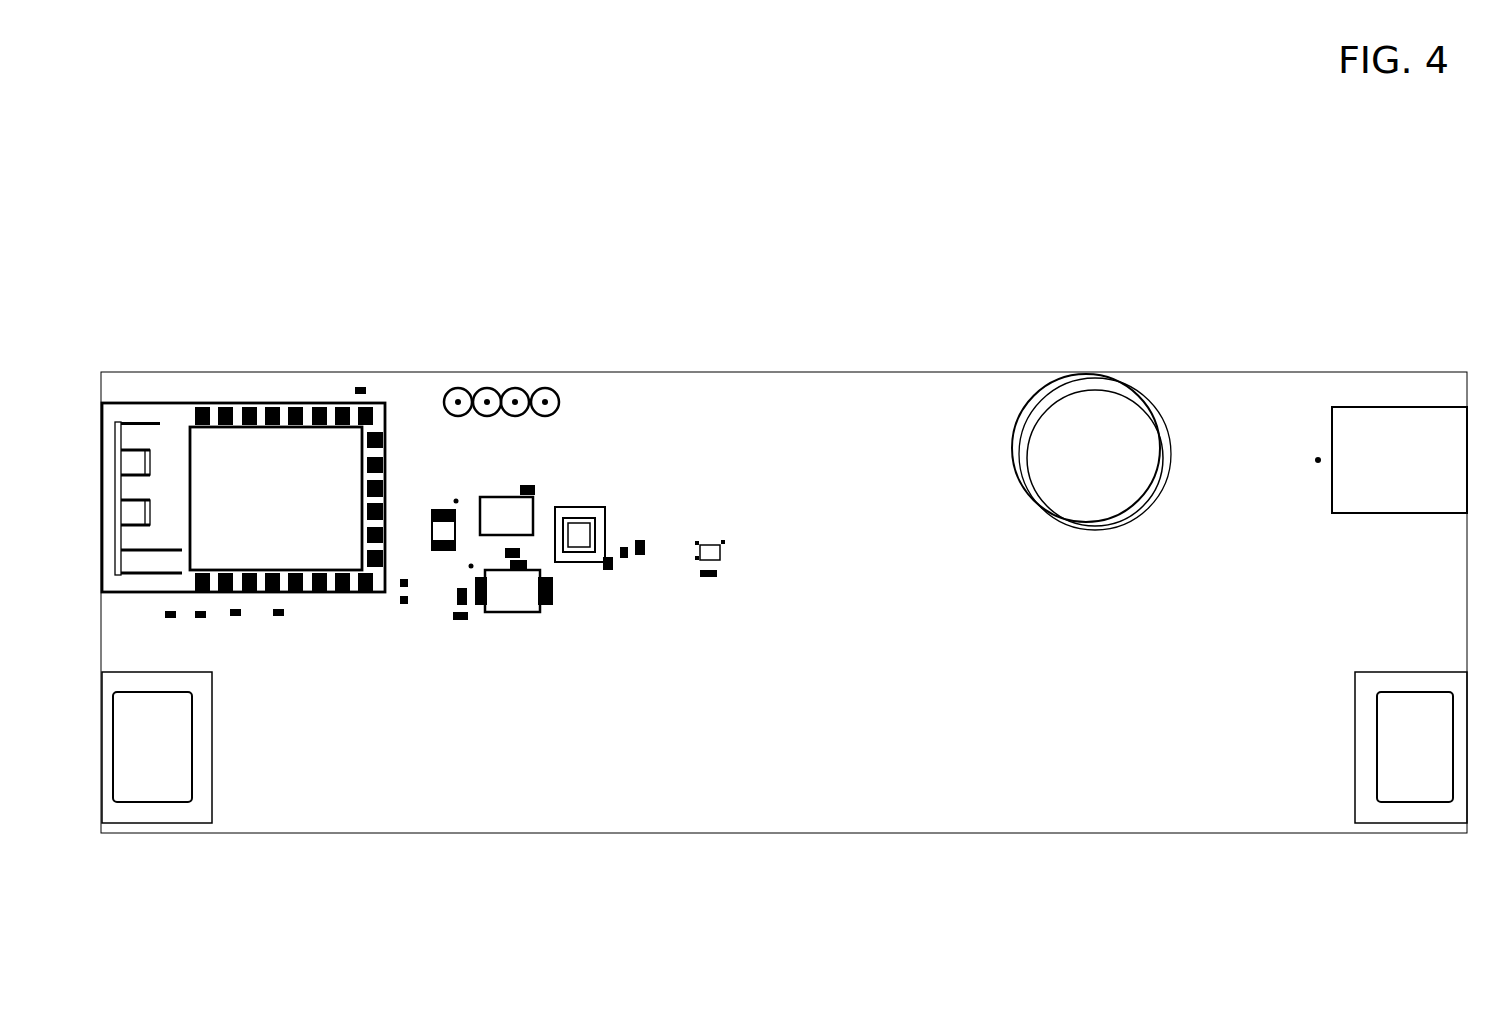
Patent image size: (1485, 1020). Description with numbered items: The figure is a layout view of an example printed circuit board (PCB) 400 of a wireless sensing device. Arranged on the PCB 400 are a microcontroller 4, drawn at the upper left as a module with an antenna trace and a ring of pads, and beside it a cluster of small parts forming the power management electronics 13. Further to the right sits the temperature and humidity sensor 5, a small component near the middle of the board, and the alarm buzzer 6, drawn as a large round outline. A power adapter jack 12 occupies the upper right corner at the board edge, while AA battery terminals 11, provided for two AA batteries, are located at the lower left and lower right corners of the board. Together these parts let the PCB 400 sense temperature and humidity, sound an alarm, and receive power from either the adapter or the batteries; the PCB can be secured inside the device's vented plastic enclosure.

The printed circuit board (PCB) 400 is at (845, 72).
The microcontroller 4 is at (157, 437).
The power management electronics 13 is at (453, 467).
The temperature and humidity sensor 5 is at (692, 527).
The alarm buzzer 6 is at (1018, 405).
The power adapter jack 12 is at (1390, 385).
The AA battery terminals 11 is at (1318, 737).